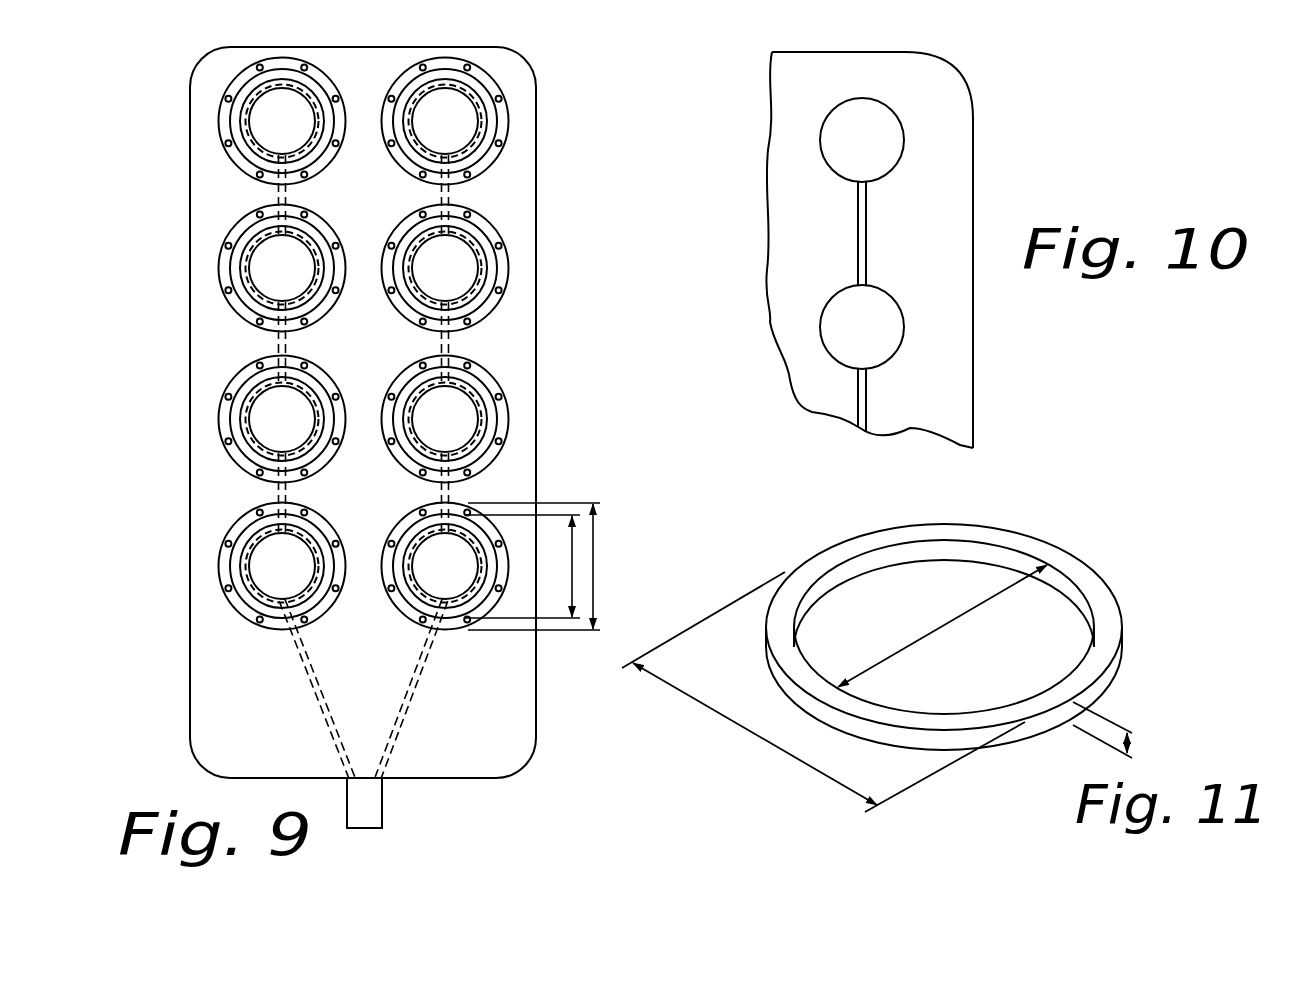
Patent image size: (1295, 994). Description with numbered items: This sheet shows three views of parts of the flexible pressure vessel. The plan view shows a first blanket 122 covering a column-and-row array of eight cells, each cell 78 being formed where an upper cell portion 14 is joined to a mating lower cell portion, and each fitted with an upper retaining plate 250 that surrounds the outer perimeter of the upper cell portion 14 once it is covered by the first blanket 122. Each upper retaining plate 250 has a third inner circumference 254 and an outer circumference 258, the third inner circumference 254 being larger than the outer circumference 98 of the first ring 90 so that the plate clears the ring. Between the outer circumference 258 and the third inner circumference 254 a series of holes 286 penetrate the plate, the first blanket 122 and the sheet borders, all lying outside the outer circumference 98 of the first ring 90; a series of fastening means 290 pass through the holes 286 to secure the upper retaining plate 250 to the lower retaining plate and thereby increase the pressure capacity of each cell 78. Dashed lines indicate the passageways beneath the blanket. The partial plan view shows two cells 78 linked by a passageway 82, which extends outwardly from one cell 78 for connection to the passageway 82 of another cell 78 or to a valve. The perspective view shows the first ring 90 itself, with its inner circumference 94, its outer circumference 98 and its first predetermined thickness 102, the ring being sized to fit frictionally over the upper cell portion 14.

In FIG. 9, the upper cell portion 14 is at (428, 580).
In FIG. 10, the cell 78 is at (893, 140).
In FIG. 10, the passageway 82 is at (865, 222).
In FIG. 11, the first ring 90 is at (1092, 568).
In FIG. 11, the inner circumference 94 is at (963, 612).
In FIG. 11, the outer circumference 98 is at (752, 732).
In FIG. 11, the first predetermined thickness 102 is at (1137, 745).
In FIG. 9, the first blanket 122 is at (510, 755).
In FIG. 9, the upper retaining plate 250 is at (490, 383).
In FIG. 9, the third inner circumference 254 is at (572, 545).
In FIG. 9, the outer circumference 258 is at (592, 567).
In FIG. 9, the holes 286 is at (508, 249).
In FIG. 9, the fastening means 290 is at (508, 288).